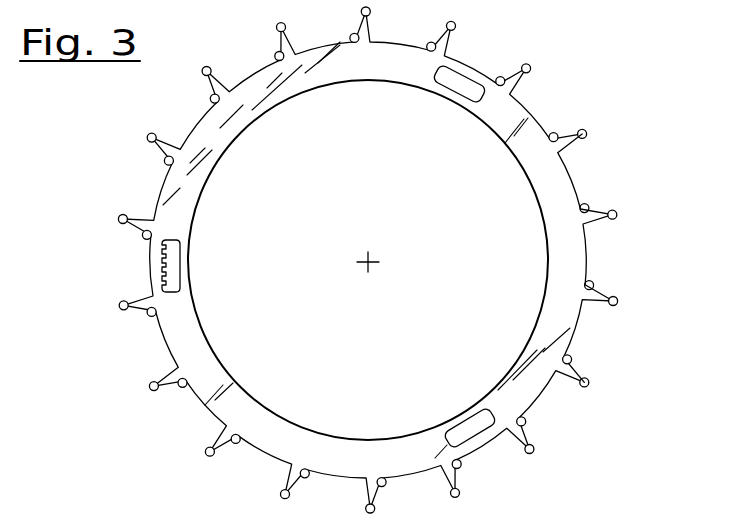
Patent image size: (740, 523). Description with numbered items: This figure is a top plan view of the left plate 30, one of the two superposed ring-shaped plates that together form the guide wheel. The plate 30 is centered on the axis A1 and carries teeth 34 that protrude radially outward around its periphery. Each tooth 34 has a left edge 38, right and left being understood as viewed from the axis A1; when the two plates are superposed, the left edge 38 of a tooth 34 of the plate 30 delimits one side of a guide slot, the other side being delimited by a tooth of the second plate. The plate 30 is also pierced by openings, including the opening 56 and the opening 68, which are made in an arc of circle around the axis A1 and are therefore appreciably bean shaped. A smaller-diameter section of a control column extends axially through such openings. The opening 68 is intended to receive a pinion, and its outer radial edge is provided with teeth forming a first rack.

The left plate 30 is at (642, 148).
The teeth 34 is at (598, 305).
The left edge 38 is at (570, 360).
The opening 56 is at (460, 84).
The opening 68 is at (170, 270).
The axis A1 is at (372, 258).